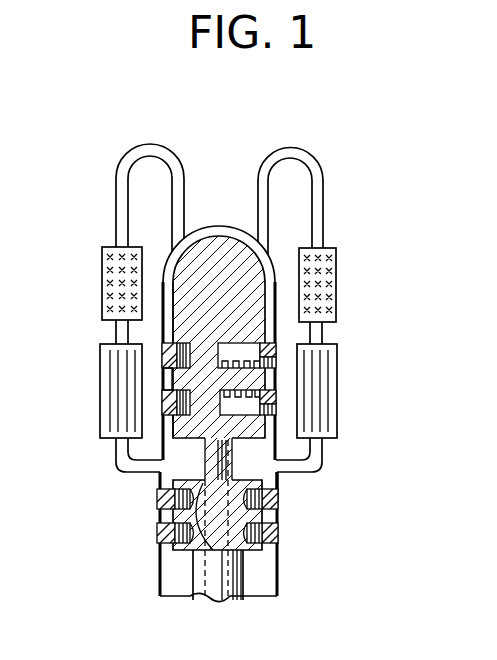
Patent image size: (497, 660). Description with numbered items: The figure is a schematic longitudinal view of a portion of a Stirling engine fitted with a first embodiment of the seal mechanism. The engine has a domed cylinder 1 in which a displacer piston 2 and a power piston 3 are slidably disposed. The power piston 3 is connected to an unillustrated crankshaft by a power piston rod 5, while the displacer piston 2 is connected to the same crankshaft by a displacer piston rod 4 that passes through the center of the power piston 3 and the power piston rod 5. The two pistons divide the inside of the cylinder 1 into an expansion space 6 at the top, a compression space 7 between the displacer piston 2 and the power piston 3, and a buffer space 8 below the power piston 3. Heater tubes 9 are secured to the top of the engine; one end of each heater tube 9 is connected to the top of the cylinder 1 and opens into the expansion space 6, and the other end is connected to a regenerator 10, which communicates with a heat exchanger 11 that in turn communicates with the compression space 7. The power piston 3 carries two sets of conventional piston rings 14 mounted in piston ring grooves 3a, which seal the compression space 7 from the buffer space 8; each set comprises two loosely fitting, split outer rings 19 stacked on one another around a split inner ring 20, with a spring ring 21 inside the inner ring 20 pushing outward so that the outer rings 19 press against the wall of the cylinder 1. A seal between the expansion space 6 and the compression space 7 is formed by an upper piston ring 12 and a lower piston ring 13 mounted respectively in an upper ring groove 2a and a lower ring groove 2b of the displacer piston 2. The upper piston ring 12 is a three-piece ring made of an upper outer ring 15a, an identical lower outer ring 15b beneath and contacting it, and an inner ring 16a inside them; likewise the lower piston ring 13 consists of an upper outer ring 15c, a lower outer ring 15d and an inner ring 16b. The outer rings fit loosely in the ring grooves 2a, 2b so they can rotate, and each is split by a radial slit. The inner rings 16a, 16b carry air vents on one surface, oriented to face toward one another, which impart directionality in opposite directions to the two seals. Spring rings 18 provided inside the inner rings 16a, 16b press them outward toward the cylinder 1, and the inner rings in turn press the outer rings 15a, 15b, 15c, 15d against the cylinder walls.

The domed cylinder 1 is at (276, 268).
The displacer piston 2 is at (210, 245).
The upper ring groove 2a is at (198, 356).
The lower ring groove 2b is at (196, 415).
The power piston 3 is at (242, 550).
The piston ring grooves 3a is at (224, 592).
The displacer piston rod 4 is at (280, 483).
The power piston rod 5 is at (193, 578).
The expansion space 6 is at (232, 232).
The compression space 7 is at (168, 462).
The buffer space 8 is at (263, 578).
The heater tubes 9 is at (318, 180).
The regenerator 10 is at (338, 262).
The heat exchanger 11 is at (327, 433).
The upper piston ring 12 is at (163, 345).
The lower piston ring 13 is at (157, 403).
The piston rings 14 is at (158, 497).
The upper outer ring 15a is at (278, 345).
The lower outer ring 15b is at (278, 362).
The upper outer ring 15c is at (278, 396).
The lower outer ring 15d is at (278, 410).
The inner ring 16a is at (243, 345).
The inner ring 16b is at (240, 440).
The spring rings 18 is at (183, 344).
The outer rings 19 is at (283, 494).
The inner ring 20 is at (283, 522).
The spring ring 21 is at (283, 535).